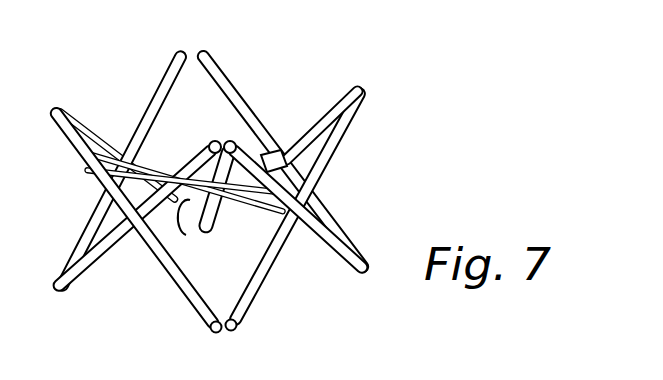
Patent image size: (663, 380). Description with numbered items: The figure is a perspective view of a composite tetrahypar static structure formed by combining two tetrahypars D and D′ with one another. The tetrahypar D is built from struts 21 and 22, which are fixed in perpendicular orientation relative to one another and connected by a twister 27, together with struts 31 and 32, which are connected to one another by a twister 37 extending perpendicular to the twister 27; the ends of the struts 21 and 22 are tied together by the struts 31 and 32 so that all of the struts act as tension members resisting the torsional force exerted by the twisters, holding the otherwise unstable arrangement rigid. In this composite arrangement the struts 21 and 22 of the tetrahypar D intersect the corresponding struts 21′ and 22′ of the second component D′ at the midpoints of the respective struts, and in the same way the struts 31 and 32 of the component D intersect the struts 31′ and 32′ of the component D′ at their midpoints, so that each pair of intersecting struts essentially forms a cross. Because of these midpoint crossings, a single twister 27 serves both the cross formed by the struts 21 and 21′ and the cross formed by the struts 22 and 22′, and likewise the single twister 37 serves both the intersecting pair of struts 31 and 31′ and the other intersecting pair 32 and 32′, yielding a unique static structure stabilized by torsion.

The strut 21 is at (222, 75).
The strut 21′ is at (313, 116).
The strut 22 is at (67, 291).
The strut 22′ is at (198, 313).
The strut 31 is at (348, 271).
The strut 31′ is at (248, 313).
The strut 32 is at (160, 92).
The strut 32′ is at (125, 100).
The twister 37 is at (145, 173).
The twister 27 is at (186, 236).
The tetrahypar D is at (140, 61).
The tetrahypar D′ is at (378, 136).